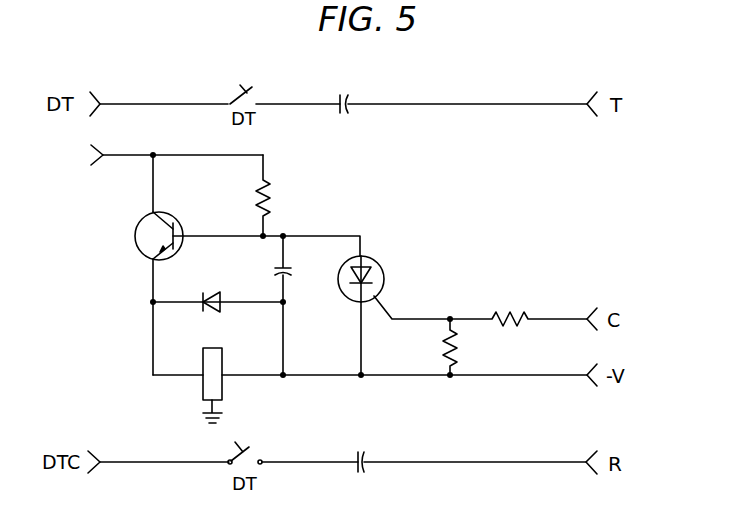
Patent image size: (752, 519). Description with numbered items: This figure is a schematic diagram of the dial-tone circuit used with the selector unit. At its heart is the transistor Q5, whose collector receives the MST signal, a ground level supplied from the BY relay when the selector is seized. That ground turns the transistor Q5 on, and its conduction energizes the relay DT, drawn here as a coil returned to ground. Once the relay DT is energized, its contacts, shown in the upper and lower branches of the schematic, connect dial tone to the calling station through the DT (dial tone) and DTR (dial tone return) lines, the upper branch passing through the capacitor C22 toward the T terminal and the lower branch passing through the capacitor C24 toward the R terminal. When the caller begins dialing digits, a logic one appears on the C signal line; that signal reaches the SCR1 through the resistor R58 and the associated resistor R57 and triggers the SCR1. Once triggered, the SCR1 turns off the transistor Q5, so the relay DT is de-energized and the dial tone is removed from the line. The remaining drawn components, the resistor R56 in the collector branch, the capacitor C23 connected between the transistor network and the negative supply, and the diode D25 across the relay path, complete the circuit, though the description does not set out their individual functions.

The transistor Q5 is at (134, 236).
The resistor R56 is at (287, 195).
The resistor R57 is at (472, 347).
The resistor R58 is at (518, 305).
The capacitor C22 is at (347, 117).
The capacitor C23 is at (303, 269).
The capacitor C24 is at (361, 475).
The diode D25 is at (218, 289).
The SCR SCR1 is at (378, 258).
The relay DT is at (211, 374).